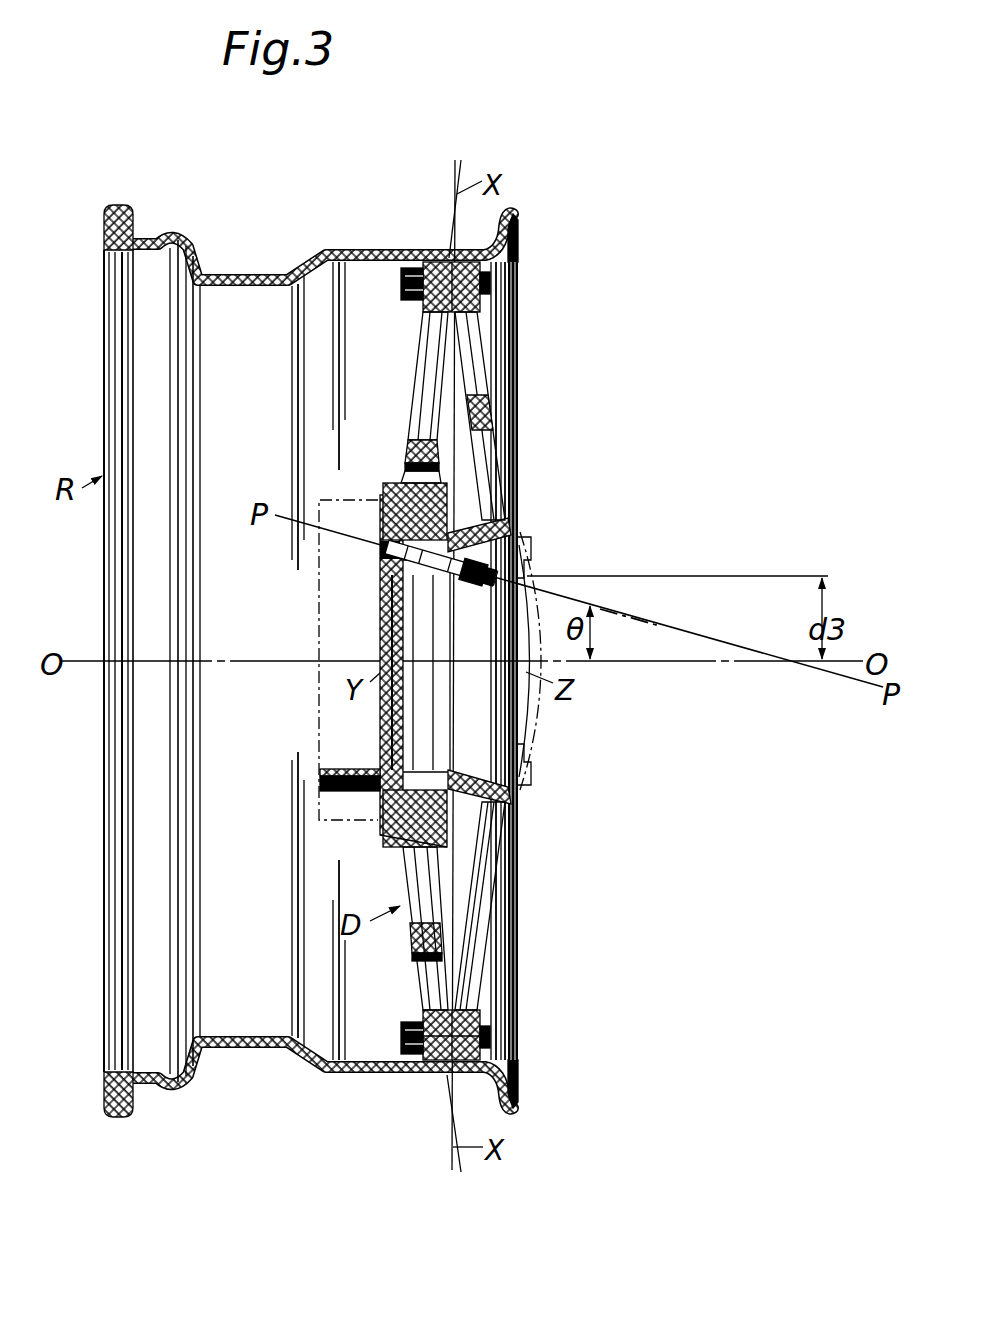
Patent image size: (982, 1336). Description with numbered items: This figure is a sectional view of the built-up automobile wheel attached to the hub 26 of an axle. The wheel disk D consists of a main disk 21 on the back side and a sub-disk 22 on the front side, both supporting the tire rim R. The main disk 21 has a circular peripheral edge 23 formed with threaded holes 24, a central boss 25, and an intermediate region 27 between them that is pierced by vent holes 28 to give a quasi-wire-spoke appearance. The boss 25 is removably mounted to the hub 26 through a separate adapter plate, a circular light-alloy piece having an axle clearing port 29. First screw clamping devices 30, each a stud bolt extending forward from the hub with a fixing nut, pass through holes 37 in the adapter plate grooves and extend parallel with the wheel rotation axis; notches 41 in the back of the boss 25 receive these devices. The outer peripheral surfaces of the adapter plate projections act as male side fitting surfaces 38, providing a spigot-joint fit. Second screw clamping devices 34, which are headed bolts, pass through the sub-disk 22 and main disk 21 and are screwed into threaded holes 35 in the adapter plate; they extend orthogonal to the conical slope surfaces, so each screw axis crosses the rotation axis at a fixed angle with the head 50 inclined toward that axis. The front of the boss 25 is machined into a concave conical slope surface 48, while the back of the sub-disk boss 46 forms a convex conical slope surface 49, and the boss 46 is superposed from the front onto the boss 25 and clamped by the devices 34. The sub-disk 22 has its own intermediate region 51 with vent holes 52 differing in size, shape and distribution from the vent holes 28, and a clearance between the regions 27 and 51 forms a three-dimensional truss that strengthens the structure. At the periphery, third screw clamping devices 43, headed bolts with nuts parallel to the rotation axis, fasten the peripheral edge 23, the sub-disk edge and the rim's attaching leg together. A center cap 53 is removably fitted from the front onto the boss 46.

The main disk 21 is at (404, 418).
The sub-disk 22 is at (503, 916).
The peripheral edge 23 is at (425, 302).
The threaded holes 24 is at (436, 1072).
The boss 25 is at (398, 490).
The hub 26 is at (318, 599).
The intermediate region 27 is at (418, 948).
The vent holes 28 is at (424, 368).
The axle clearing port 29 is at (382, 612).
The first screw clamping devices 30 is at (320, 781).
The second screw clamping devices 34 is at (425, 588).
The threaded holes 35 is at (385, 549).
The holes 37 is at (378, 805).
The male side fitting surfaces 38 is at (426, 495).
The notches 41 is at (432, 836).
The third screw clamping devices 43 is at (488, 1043).
The boss 46 is at (520, 538).
The concave conical slope surface 48 is at (520, 781).
The convex conical slope surface 49 is at (530, 778).
The head 50 is at (477, 592).
The intermediate region 51 is at (494, 414).
The vent holes 52 is at (506, 485).
The center cap 53 is at (540, 706).